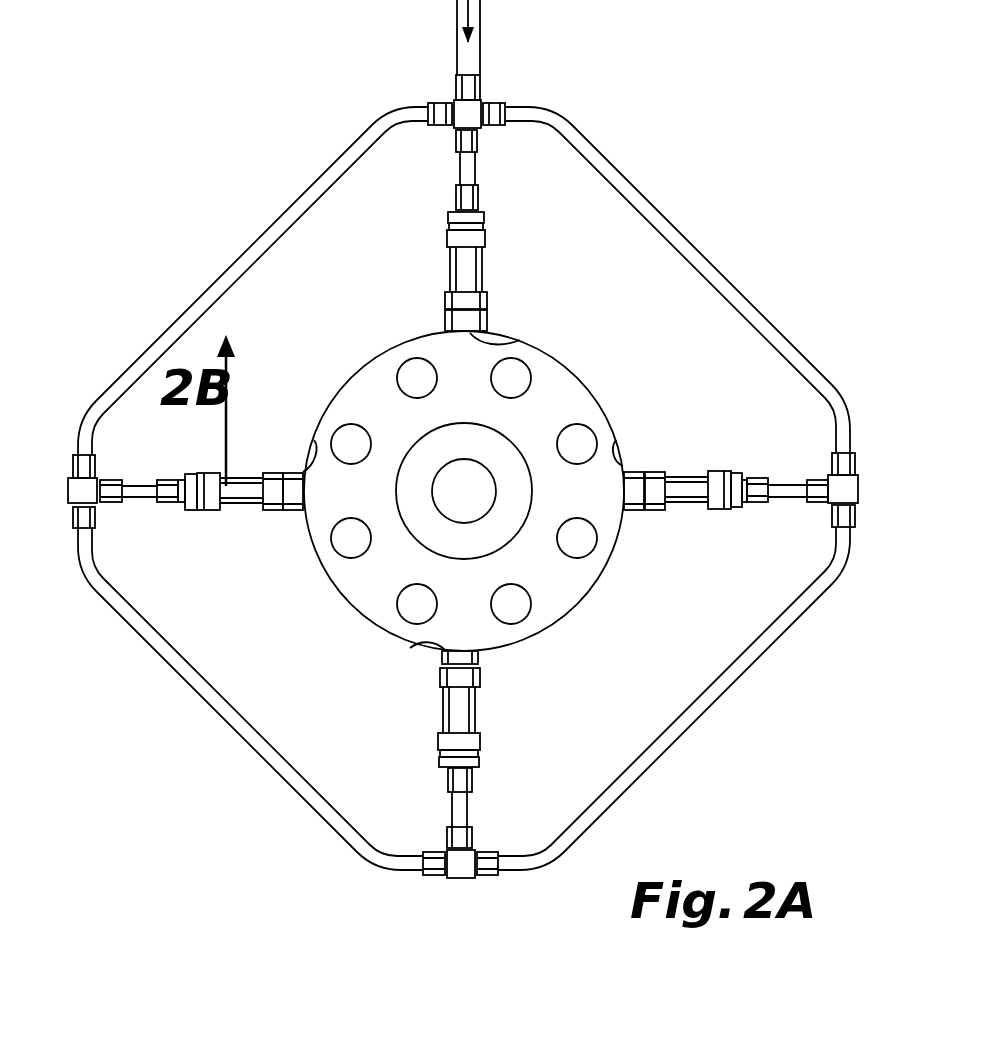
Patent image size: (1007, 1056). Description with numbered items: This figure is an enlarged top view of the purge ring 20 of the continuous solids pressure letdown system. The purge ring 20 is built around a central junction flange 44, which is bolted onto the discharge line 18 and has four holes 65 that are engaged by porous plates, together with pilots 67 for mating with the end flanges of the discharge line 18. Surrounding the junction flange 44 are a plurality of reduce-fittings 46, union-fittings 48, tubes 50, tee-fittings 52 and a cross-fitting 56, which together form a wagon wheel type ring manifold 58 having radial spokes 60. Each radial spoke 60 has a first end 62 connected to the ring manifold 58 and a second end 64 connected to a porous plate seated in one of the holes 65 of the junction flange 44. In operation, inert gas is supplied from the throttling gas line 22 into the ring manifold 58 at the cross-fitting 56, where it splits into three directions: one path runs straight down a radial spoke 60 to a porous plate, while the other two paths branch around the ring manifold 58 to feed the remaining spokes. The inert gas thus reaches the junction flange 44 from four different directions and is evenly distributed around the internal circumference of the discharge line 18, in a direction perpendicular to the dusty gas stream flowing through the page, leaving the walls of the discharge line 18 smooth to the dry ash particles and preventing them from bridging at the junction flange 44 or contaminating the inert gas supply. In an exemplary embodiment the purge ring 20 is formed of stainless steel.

The discharge line 18 is at (488, 514).
The purge ring 20 is at (804, 72).
The throttling gas line 22 is at (481, 33).
The junction flange 44 is at (318, 592).
The reduce-fitting 46 is at (485, 217).
The union-fitting 48 is at (445, 296).
The tube 50 is at (461, 168).
The tee-fitting 52 is at (70, 515).
The cross-fitting 56 is at (483, 84).
The ring manifold 58 is at (733, 266).
The radial spoke 60 is at (440, 236).
The first end 62 is at (448, 133).
The second end 64 is at (441, 322).
The hole 65 is at (304, 472).
The pilot 67 is at (412, 536).